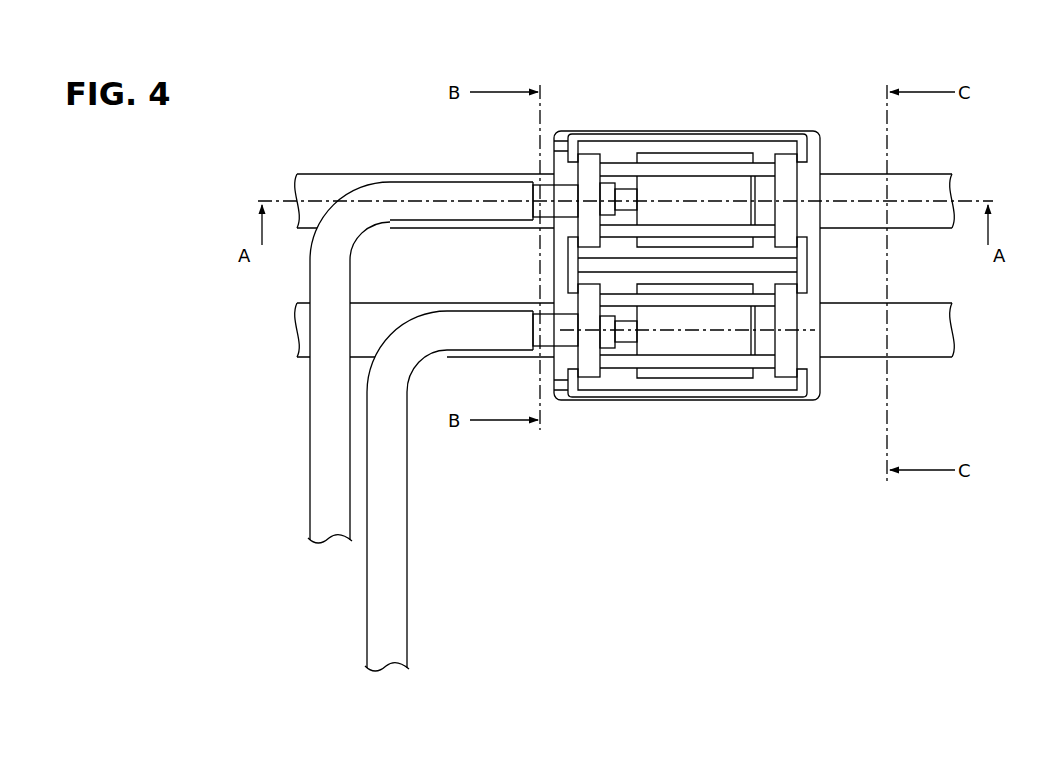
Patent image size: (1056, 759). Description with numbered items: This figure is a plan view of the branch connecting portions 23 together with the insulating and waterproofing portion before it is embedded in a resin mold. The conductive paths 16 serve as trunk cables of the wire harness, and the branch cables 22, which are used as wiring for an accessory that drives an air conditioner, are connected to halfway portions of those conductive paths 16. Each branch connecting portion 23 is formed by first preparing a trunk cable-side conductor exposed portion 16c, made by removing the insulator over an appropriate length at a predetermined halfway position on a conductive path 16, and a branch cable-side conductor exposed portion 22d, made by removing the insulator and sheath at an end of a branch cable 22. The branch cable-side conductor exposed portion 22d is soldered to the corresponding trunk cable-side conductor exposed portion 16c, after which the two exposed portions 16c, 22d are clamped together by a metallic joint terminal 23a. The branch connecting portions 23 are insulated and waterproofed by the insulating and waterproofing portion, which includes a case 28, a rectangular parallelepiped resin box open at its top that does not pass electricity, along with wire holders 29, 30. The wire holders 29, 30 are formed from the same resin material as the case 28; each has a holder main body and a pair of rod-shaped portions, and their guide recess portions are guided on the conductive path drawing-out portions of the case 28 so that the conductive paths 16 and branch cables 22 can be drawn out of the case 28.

The conductive path 16 is at (318, 170).
The branch cable 22 is at (362, 565).
The branch connecting portion 23 is at (709, 155).
The metallic joint terminal 23a is at (658, 186).
The case 28 is at (589, 128).
The wire holder 29 is at (566, 181).
The wire holder 30 is at (803, 328).
The trunk cable-side conductor exposed portion 16c is at (783, 270).
The branch cable-side conductor exposed portion 22d is at (703, 193).